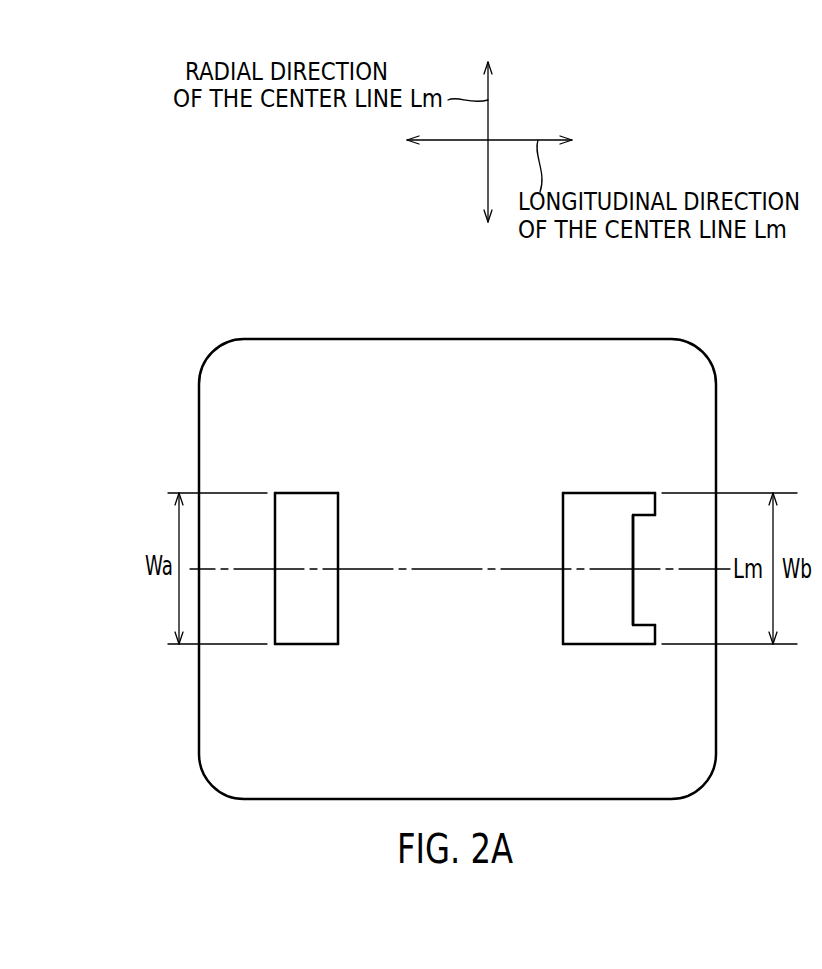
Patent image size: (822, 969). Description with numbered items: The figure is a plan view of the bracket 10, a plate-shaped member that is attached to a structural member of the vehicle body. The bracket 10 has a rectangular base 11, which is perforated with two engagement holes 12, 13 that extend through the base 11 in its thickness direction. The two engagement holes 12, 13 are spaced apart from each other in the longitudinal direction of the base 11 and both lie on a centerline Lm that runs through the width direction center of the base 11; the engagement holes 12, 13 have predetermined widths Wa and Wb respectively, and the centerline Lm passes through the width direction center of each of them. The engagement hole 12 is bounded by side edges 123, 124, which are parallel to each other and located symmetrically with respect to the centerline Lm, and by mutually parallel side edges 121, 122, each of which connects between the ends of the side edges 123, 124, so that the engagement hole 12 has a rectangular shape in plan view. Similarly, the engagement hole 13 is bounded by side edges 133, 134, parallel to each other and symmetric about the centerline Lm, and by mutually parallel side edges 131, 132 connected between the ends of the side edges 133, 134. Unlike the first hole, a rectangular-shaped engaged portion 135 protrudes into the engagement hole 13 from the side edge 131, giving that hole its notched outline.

The bracket 10 is at (496, 537).
The base 11 is at (580, 348).
The engagement hole 12 is at (308, 569).
The side edge 121 is at (283, 594).
The side edge 122 is at (328, 608).
The side edge 123 is at (304, 495).
The side edge 124 is at (305, 644).
The engagement hole 13 is at (596, 570).
The side edge 131 is at (643, 626).
The side edge 132 is at (571, 636).
The side edge 133 is at (577, 496).
The side edge 134 is at (614, 645).
The engaged portion 135 is at (640, 596).